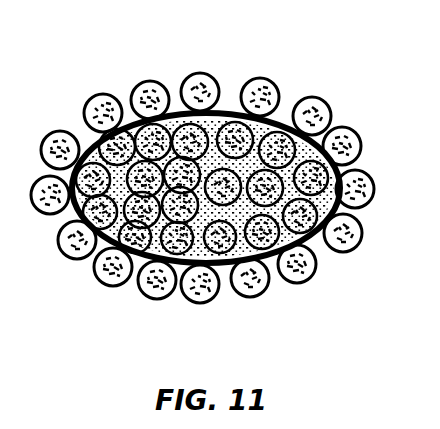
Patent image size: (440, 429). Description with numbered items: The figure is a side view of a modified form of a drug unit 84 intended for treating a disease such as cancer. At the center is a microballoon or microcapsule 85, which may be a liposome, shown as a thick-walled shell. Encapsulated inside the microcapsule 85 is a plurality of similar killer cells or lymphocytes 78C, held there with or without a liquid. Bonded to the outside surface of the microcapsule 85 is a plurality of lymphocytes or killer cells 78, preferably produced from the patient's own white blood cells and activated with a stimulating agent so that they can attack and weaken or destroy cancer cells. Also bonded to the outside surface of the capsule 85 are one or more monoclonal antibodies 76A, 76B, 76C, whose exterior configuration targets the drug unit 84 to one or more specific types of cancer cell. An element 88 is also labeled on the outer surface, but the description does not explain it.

The drug unit 84 is at (124, 60).
The lymphocyte 78 is at (168, 84).
The monoclonal antibody 76A is at (222, 84).
The microballoon or microcapsule 85 is at (333, 122).
The encapsulated killer cells 78C is at (362, 155).
The outer strand 88 is at (388, 190).
The monoclonal antibody 76B is at (358, 243).
The monoclonal antibody 76C is at (157, 290).